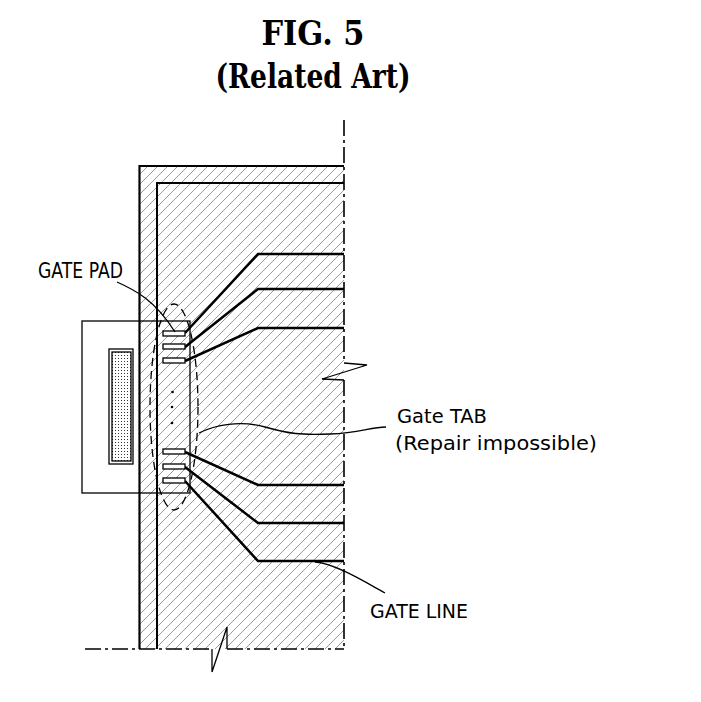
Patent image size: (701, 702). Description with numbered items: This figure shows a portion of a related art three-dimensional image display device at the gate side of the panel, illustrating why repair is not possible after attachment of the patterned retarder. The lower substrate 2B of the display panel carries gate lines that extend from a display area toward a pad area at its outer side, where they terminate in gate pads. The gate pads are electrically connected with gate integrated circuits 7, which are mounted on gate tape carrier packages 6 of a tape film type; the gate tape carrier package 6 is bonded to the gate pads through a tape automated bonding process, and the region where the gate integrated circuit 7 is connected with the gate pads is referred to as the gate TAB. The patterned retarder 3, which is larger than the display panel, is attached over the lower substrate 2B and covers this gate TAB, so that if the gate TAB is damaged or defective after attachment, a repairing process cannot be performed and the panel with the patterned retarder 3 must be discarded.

The patterned retarder 3 is at (198, 165).
The lower substrate 2B is at (248, 183).
The gate tape carrier package 6 is at (82, 364).
The gate integrated circuit 7 is at (109, 415).